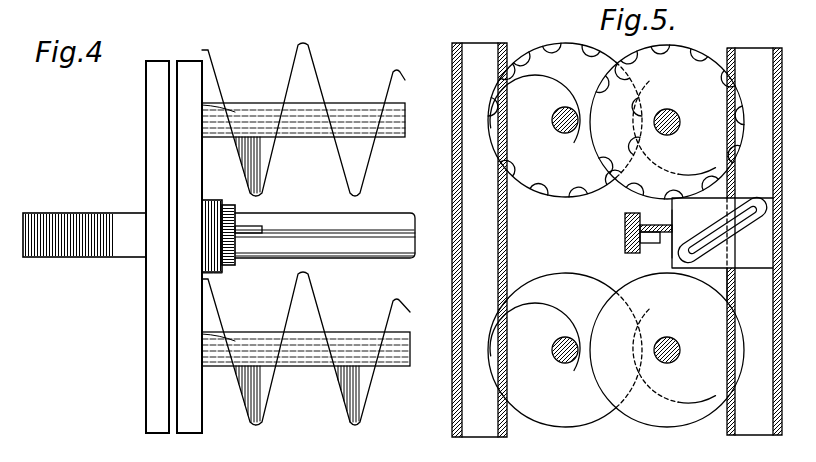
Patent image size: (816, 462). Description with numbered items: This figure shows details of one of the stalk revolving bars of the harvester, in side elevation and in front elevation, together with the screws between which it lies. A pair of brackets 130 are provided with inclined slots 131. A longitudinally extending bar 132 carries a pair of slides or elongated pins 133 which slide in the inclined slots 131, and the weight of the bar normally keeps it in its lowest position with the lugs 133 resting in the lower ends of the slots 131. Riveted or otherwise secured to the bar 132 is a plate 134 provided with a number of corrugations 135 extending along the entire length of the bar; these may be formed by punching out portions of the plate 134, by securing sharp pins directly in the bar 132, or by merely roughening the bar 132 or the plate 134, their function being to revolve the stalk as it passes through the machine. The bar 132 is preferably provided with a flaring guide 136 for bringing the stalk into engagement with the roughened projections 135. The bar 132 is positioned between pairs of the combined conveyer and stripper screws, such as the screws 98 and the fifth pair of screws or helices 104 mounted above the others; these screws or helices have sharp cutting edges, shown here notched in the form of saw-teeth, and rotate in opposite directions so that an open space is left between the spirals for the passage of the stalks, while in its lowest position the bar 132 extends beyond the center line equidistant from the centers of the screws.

In FIG. 4, the combined conveyer and stripper mechanism 98 is at (306, 348).
In FIG. 5, the combined conveyer and stripper mechanism 98 is at (616, 350).
In FIG. 4, the fifth pair of screws or helices 104 is at (303, 119).
In FIG. 5, the fifth pair of screws or helices 104 is at (616, 121).
In FIG. 4, the brackets 130 is at (222, 272).
In FIG. 5, the brackets 130 is at (722, 262).
In FIG. 5, the inclined slots 131 is at (755, 198).
In FIG. 4, the longitudinally extending bar 132 is at (383, 230).
In FIG. 5, the longitudinally extending bar 132 is at (662, 248).
In FIG. 4, the slides or elongated pins 133 is at (238, 223).
In FIG. 5, the slides or elongated pins 133 is at (722, 230).
In FIG. 4, the plate 134 is at (346, 254).
In FIG. 5, the plate 134 is at (632, 218).
In FIG. 5, the corrugations 135 is at (617, 241).
In FIG. 4, the flaring guide 136 is at (78, 212).